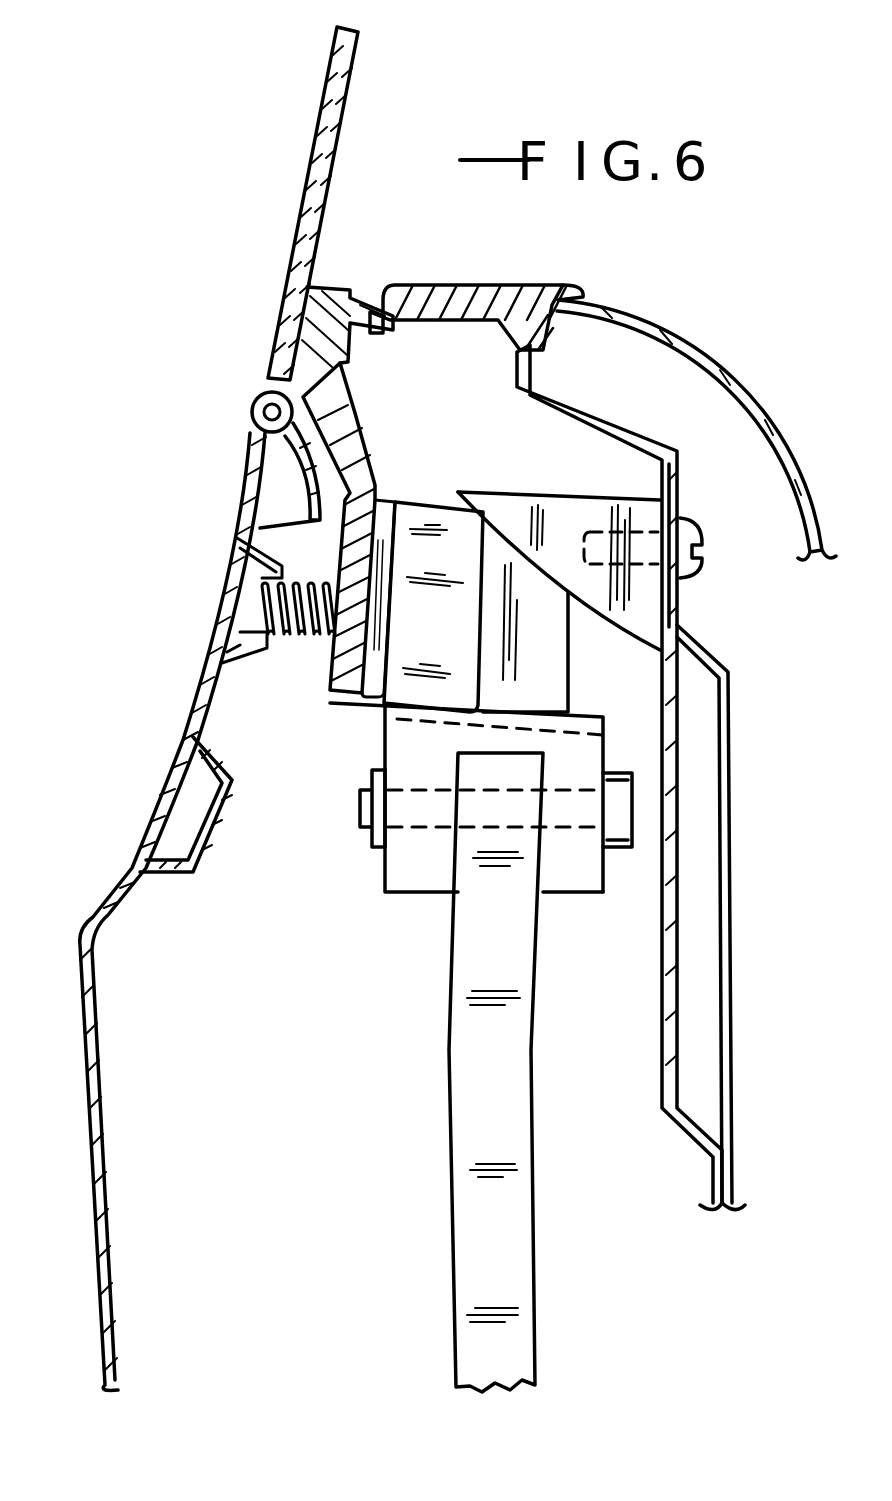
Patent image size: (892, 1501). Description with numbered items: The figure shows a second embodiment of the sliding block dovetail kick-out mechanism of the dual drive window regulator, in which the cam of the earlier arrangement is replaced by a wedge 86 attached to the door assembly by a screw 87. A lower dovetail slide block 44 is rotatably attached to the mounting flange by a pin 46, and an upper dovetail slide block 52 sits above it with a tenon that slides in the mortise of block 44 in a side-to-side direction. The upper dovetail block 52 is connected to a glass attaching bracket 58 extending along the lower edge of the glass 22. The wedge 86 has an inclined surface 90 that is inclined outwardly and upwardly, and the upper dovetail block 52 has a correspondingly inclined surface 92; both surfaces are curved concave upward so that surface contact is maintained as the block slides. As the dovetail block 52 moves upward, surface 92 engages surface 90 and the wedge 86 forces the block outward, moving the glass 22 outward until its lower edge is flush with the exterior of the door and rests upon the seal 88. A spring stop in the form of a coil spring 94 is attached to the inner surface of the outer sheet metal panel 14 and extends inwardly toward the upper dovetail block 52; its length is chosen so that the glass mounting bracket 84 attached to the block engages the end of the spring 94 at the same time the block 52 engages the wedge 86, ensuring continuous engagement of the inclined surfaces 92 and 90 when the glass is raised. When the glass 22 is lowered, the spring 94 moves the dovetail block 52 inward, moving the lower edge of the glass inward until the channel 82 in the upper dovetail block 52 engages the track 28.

The outer sheet metal panel 14 is at (232, 553).
The glass 22 is at (338, 123).
The track 28 is at (448, 1035).
The lower dovetail slide block 44 is at (405, 893).
The pin 46 is at (360, 810).
The upper dovetail slide block 52 is at (565, 680).
The glass attaching bracket 58 is at (318, 285).
The channel 82 is at (405, 497).
The glass mounting bracket 84 is at (350, 445).
The wedge 86 is at (512, 497).
The screw 87 is at (700, 565).
The seal 88 is at (257, 400).
The inclined surface 90 is at (600, 617).
The inclined surface 92 is at (543, 567).
The coil spring 94 is at (283, 643).